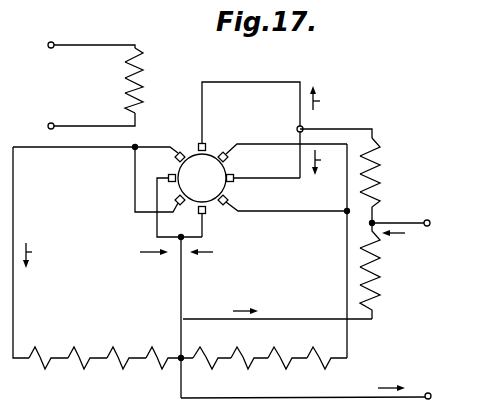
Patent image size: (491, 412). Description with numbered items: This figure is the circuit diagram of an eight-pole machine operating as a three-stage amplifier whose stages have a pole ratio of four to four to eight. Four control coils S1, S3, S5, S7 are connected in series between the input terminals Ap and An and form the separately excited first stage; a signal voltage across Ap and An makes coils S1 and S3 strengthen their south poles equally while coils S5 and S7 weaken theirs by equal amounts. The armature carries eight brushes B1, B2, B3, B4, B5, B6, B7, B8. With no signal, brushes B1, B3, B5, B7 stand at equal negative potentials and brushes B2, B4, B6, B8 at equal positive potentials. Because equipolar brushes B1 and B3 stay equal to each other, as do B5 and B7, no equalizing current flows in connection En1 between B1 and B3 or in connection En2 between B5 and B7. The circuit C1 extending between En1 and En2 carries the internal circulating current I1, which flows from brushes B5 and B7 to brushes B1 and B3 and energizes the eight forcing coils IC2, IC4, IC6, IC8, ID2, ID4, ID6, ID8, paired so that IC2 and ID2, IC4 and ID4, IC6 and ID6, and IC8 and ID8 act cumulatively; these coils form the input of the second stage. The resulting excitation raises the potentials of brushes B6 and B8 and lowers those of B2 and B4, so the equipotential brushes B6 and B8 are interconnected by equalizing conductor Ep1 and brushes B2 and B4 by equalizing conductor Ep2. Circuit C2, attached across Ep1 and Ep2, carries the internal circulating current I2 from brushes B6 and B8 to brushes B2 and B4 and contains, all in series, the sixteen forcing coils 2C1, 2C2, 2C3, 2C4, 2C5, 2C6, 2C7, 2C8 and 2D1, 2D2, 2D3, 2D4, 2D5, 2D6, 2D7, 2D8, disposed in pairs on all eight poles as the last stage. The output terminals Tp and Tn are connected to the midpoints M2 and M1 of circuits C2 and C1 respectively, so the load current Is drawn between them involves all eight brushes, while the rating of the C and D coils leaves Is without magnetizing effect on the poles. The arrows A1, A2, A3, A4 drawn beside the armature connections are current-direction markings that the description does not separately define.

The input terminal Ap is at (35, 48).
The input terminal An is at (35, 129).
The control coil S1 is at (144, 53).
The control coil S3 is at (144, 70).
The control coil S5 is at (144, 87).
The control coil S7 is at (144, 102).
The connection En1 is at (280, 82).
The connection En2 is at (157, 237).
The equalizing conductor Ep1 is at (132, 168).
The equalizing conductor Ep2 is at (346, 236).
The armature current arrow A1 is at (153, 259).
The armature current arrow A2 is at (206, 259).
The armature current arrow A3 is at (326, 98).
The armature current arrow A4 is at (326, 162).
The brush B1 is at (206, 145).
The brush B2 is at (228, 156).
The brush B3 is at (236, 175).
The brush B4 is at (228, 201).
The brush B5 is at (203, 212).
The brush B6 is at (164, 189).
The brush B7 is at (169, 176).
The brush B8 is at (177, 156).
The forcing coil IC2 is at (381, 147).
The forcing coil IC4 is at (381, 165).
The forcing coil IC6 is at (381, 183).
The forcing coil IC8 is at (381, 201).
The forcing coil ID2 is at (381, 241).
The forcing coil ID4 is at (381, 259).
The forcing coil ID6 is at (381, 278).
The forcing coil ID8 is at (381, 296).
The midpoint M1 is at (375, 221).
The midpoint M2 is at (184, 317).
The output terminal Tn is at (401, 236).
The output terminal Tp is at (419, 388).
The internal circulating current I1 is at (313, 272).
The internal circulating current I2 is at (36, 255).
The load current Is is at (393, 386).
The circuit C1 is at (321, 319).
The circuit C2 is at (14, 315).
The forcing coil 2C1 is at (37, 373).
The forcing coil 2C2 is at (35, 344).
The forcing coil 2C3 is at (76, 373).
The forcing coil 2C4 is at (74, 344).
The forcing coil 2C5 is at (117, 373).
The forcing coil 2C6 is at (113, 344).
The forcing coil 2C7 is at (163, 373).
The forcing coil 2C8 is at (152, 344).
The forcing coil 2D1 is at (208, 373).
The forcing coil 2D2 is at (204, 344).
The forcing coil 2D3 is at (248, 373).
The forcing coil 2D4 is at (242, 344).
The forcing coil 2D5 is at (288, 373).
The forcing coil 2D6 is at (279, 344).
The forcing coil 2D7 is at (329, 373).
The forcing coil 2D8 is at (318, 344).